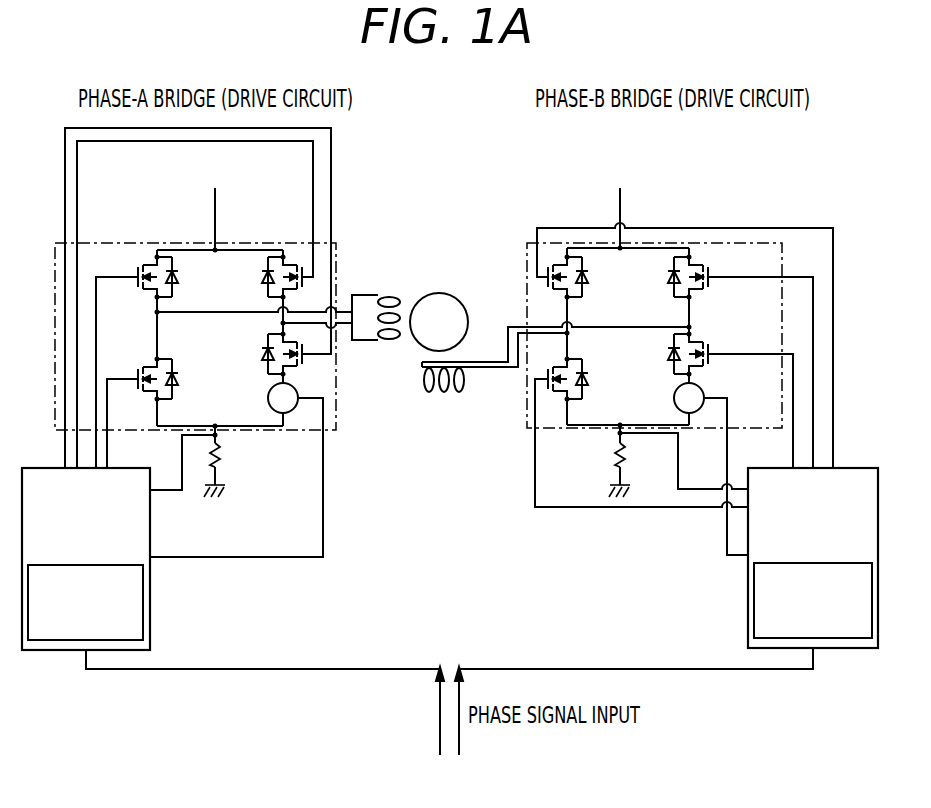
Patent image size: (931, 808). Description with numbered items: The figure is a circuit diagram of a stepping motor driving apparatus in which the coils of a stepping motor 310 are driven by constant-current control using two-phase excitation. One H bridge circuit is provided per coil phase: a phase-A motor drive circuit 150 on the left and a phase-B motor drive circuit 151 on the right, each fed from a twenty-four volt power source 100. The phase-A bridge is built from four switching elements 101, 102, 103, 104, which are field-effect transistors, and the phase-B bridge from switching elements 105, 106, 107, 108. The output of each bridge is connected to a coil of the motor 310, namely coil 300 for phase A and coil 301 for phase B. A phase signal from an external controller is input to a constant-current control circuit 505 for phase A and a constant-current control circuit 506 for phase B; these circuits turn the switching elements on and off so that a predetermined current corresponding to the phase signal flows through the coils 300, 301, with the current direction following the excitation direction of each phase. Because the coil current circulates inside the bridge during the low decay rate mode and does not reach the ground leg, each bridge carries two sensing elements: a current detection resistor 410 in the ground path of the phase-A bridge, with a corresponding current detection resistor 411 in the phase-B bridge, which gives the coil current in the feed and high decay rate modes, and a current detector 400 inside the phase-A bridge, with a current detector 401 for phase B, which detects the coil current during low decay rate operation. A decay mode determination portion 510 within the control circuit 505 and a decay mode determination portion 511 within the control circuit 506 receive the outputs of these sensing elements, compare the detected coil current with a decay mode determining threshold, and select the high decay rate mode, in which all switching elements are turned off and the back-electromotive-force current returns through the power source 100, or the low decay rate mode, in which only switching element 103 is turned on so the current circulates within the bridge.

The power source 100 is at (218, 201).
The switching element 101 is at (155, 257).
The switching element 102 is at (313, 275).
The switching element 103 is at (150, 360).
The switching element 104 is at (308, 360).
The switching element 105 is at (558, 262).
The switching element 106 is at (712, 281).
The switching element 107 is at (560, 393).
The switching element 108 is at (712, 357).
The motor drive circuit 150 is at (122, 243).
The motor drive circuit 151 is at (527, 243).
The coil 300 is at (393, 298).
The coil 301 is at (428, 394).
The stepping motor 310 is at (455, 294).
The current detector 400 is at (268, 398).
The current detector 401 is at (674, 398).
The current detection resistor 410 is at (222, 456).
The current detection resistor of phase-B bridge 411 is at (612, 460).
The constant-current control circuit 505 is at (150, 530).
The constant-current control circuit 506 is at (748, 533).
The decay mode determination portion 510 is at (143, 600).
The decay mode determination portion 511 is at (755, 603).